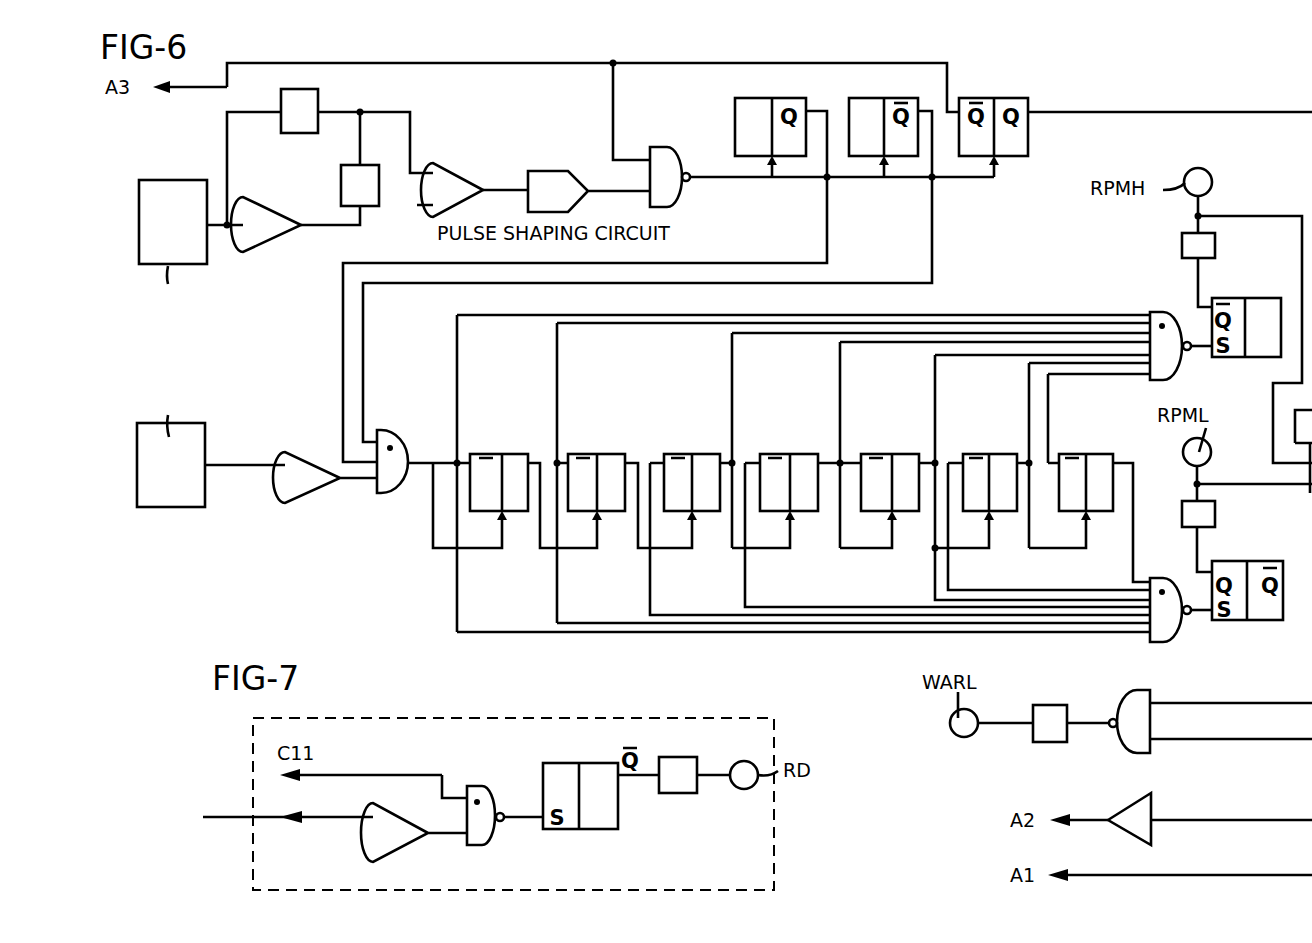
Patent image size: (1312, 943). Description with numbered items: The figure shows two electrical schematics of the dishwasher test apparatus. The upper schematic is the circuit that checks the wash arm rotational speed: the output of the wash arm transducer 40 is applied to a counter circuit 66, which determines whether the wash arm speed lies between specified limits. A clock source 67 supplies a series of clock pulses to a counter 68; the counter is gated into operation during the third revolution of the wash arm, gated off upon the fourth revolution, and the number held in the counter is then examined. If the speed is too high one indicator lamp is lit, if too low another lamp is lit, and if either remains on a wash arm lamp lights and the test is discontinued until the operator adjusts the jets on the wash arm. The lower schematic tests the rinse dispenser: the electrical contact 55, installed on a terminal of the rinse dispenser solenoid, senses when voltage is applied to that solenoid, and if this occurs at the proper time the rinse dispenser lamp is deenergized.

In FIG. 6, the wash arm transducer 40 is at (155, 213).
In FIG. 6, the counter circuit 66 is at (320, 360).
In FIG. 6, the clock source 67 is at (165, 493).
In FIG. 6, the counter 68 is at (528, 568).
In FIG. 7, the electrical contact 55 is at (228, 815).